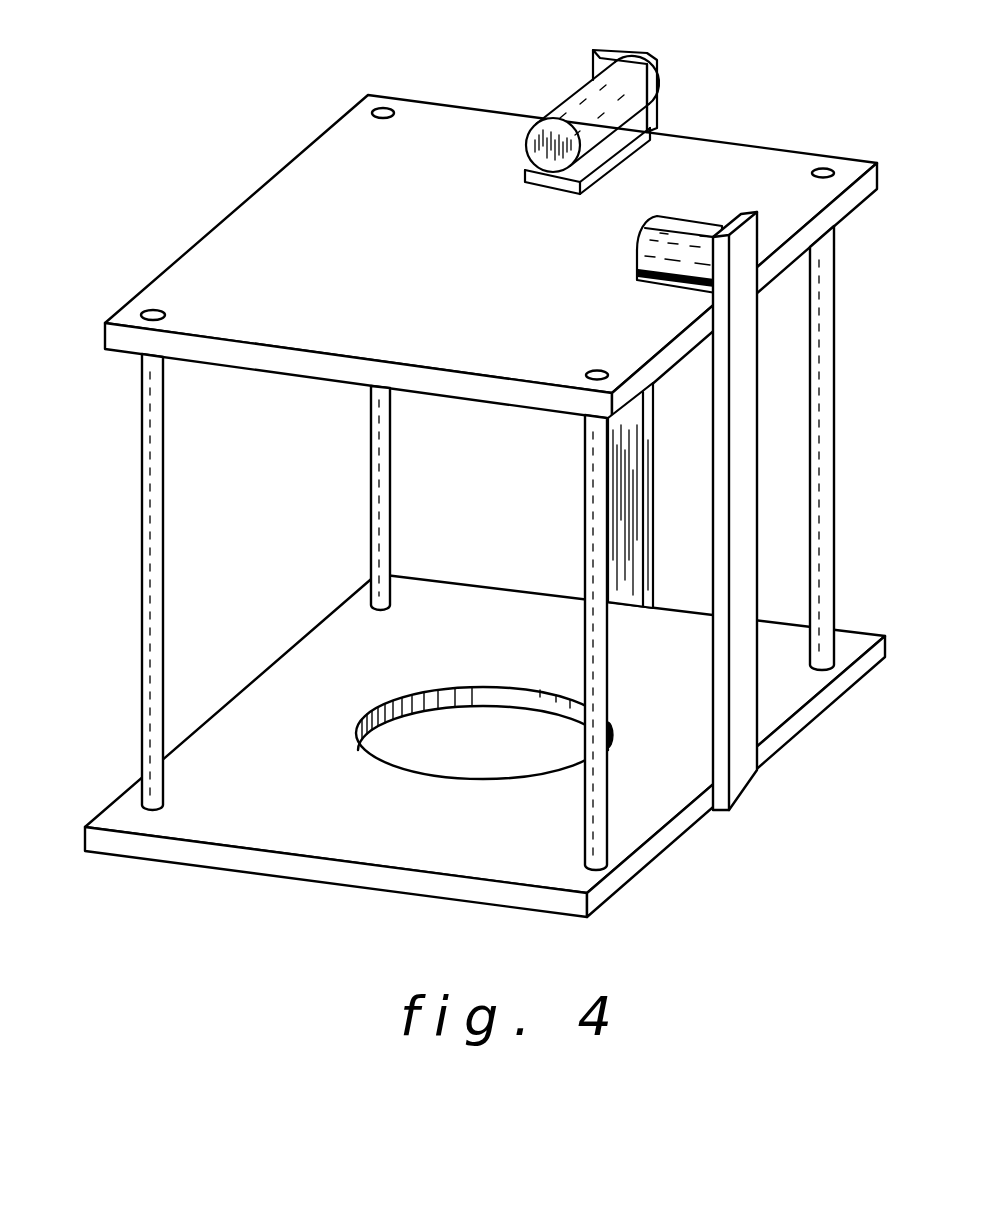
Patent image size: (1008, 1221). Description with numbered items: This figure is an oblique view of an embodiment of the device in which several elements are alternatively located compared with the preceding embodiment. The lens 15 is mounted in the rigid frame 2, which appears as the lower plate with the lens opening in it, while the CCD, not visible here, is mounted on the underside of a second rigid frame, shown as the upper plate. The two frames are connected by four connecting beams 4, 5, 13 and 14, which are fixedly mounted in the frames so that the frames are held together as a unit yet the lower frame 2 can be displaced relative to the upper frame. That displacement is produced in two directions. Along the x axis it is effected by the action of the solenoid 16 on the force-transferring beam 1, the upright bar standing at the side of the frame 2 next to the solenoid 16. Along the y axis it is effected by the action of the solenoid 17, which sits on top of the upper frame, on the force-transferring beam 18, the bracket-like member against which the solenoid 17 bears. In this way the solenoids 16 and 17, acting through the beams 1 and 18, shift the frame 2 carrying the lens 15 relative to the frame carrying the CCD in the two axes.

The force-transferring beam 1 is at (742, 770).
The rigid frame 2 is at (292, 668).
The connecting beam 4 is at (832, 413).
The connecting beam 5 is at (605, 790).
The connecting beam 13 is at (150, 590).
The connecting beam 14 is at (380, 468).
The lens 15 is at (510, 728).
The solenoid 16 is at (701, 219).
The solenoid 17 is at (582, 95).
The force-transferring beam 18 is at (652, 87).